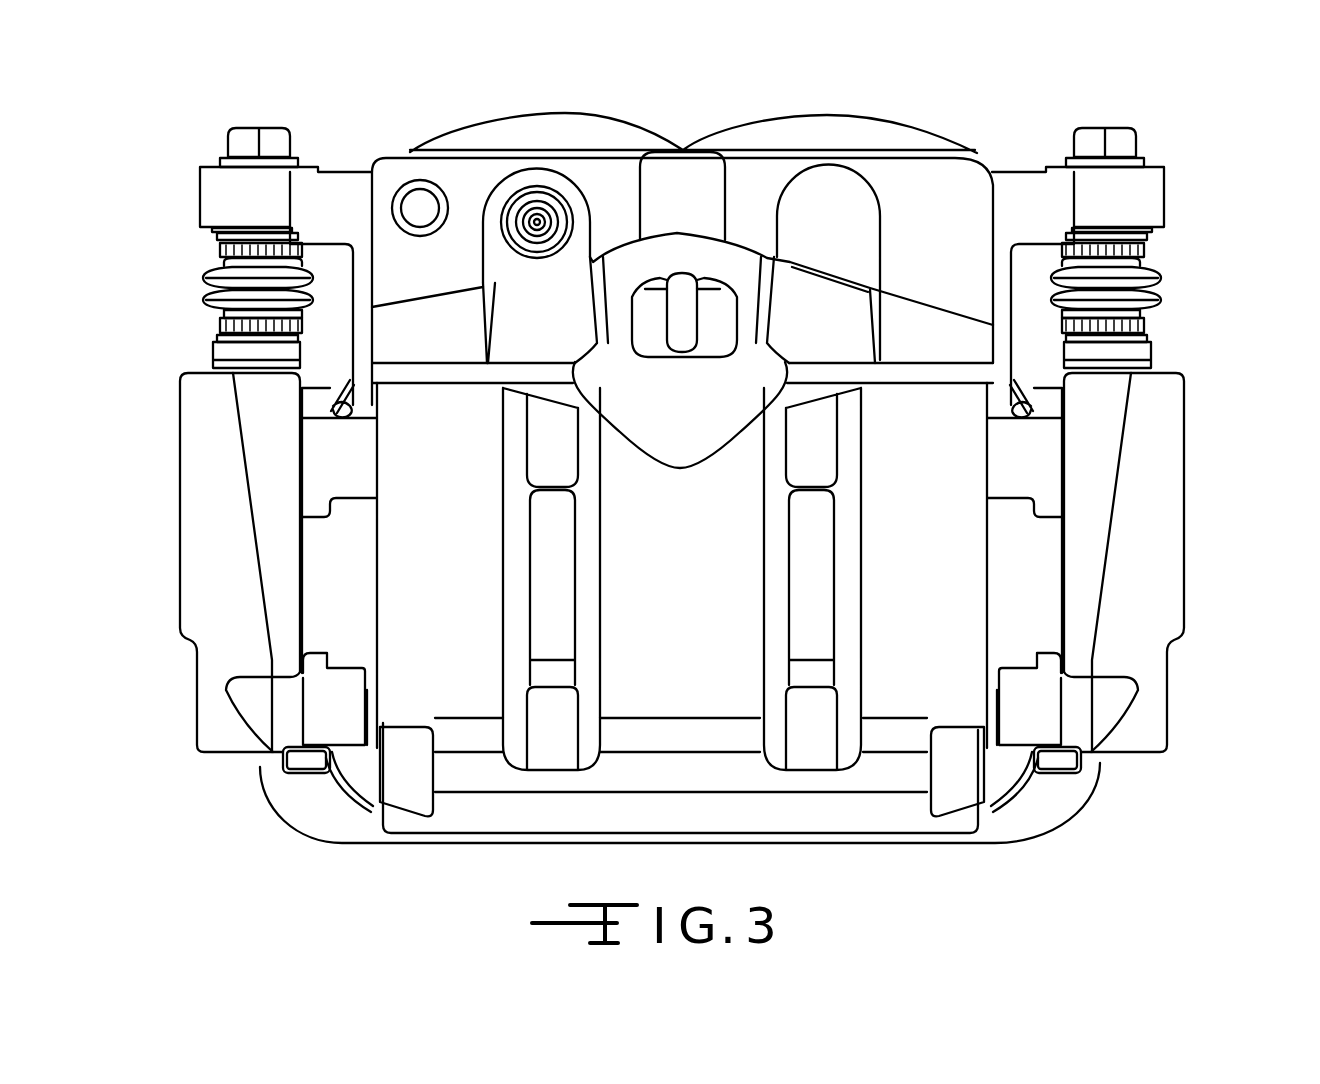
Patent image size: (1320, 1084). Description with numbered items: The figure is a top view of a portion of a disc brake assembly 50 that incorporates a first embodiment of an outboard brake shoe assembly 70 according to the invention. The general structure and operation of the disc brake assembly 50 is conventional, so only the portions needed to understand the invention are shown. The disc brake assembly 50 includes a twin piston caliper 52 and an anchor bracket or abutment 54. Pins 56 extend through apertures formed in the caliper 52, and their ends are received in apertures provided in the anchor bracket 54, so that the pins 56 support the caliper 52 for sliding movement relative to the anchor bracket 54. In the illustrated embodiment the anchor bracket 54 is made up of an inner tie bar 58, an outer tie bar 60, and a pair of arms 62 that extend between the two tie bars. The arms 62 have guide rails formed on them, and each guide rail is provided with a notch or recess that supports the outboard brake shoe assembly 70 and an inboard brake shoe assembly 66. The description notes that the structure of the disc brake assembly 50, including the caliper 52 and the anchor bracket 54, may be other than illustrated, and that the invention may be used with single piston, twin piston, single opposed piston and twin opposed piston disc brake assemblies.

The disc brake assembly 50 is at (1003, 126).
The twin piston caliper 52 is at (750, 122).
The anchor bracket 54 is at (1085, 815).
The pins 56 is at (268, 128).
The inner tie bar 58 is at (1020, 483).
The outer tie bar 60 is at (1015, 828).
The arms 62 is at (210, 548).
The inboard brake shoe assembly 66 is at (332, 387).
The outboard brake shoe assembly 70 is at (369, 805).